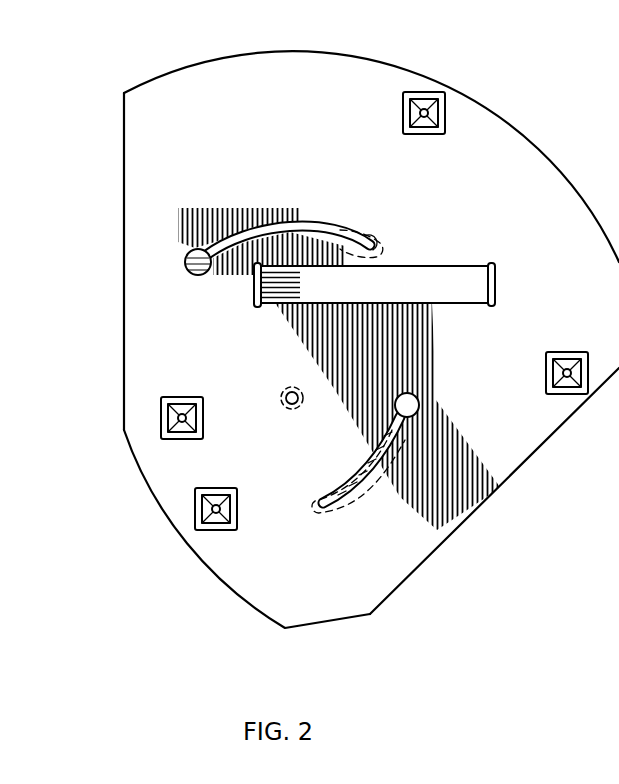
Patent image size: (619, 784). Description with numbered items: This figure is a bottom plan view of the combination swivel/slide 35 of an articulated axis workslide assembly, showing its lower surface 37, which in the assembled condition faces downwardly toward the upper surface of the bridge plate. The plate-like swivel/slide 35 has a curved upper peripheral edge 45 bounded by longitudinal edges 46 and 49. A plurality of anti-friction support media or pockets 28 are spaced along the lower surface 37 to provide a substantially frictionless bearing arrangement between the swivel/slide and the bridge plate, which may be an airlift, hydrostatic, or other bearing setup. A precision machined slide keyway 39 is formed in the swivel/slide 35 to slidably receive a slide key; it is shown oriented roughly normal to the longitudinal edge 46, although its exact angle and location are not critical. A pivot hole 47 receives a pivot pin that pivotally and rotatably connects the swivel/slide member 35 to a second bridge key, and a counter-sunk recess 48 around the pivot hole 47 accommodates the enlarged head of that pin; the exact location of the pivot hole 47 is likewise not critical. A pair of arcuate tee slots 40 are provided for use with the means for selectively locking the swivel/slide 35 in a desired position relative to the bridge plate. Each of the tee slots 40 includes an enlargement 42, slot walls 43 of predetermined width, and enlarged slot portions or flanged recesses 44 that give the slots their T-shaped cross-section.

The anti-friction support media 28 is at (426, 92).
The combination swivel/slide 35 is at (344, 322).
The lower surface 37 is at (324, 591).
The slide keyway 39 is at (426, 305).
The arcuate tee slots 40 is at (304, 220).
The enlargements 42 is at (190, 265).
The slot walls 43 is at (362, 240).
The flanged recesses 44 is at (340, 228).
The curved upper peripheral edge 45 is at (254, 50).
The longitudinal edge 46 is at (124, 313).
The pivot hole 47 is at (286, 400).
The counter-sunk recess 48 is at (286, 388).
The longitudinal edge 49 is at (497, 492).